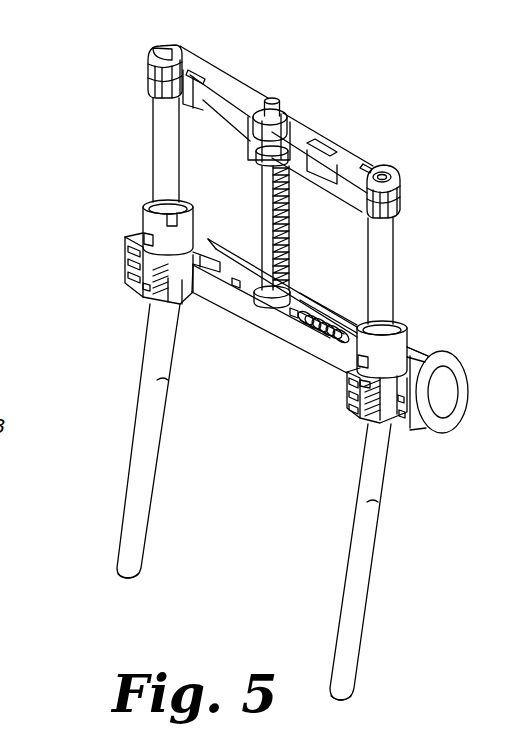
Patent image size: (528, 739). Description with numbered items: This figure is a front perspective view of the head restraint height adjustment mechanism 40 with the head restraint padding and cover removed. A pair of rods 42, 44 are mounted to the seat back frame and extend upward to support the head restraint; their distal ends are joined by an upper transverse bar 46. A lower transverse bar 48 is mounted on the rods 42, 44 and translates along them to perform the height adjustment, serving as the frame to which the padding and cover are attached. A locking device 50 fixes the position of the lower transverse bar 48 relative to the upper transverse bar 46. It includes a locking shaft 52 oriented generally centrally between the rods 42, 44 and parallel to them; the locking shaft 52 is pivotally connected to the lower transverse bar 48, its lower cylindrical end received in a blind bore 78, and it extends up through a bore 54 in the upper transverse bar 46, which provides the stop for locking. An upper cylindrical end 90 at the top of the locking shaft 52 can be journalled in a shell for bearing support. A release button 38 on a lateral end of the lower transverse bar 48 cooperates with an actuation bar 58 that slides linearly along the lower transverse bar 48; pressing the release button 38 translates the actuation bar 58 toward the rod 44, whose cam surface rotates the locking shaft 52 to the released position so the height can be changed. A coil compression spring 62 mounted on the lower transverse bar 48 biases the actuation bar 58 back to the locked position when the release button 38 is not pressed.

The release button 38 is at (448, 398).
The head restraint height adjustment mechanism 40 is at (405, 111).
The rod 42 is at (367, 593).
The rod 44 is at (157, 476).
The upper transverse bar 46 is at (402, 193).
The lower transverse bar 48 is at (140, 280).
The locking device 50 is at (297, 215).
The locking shaft 52 is at (298, 272).
The bore 54 is at (284, 118).
The actuation bar 58 is at (357, 311).
The coil compression spring 62 is at (323, 310).
The blind bore 78 is at (250, 299).
The upper cylindrical end 90 is at (272, 98).